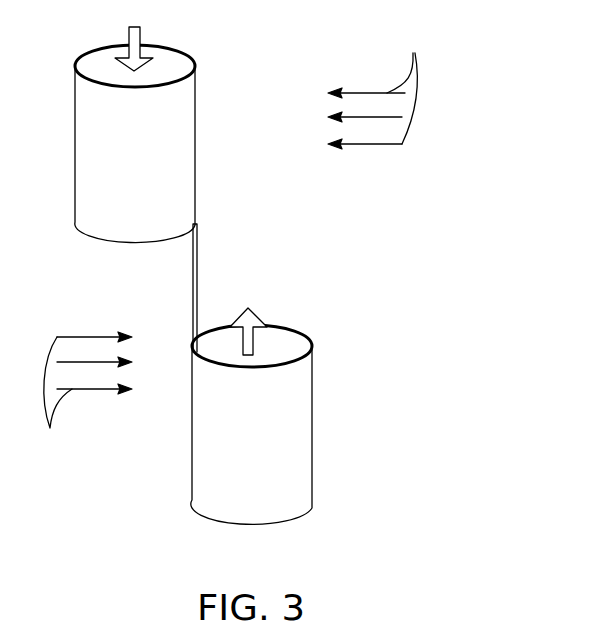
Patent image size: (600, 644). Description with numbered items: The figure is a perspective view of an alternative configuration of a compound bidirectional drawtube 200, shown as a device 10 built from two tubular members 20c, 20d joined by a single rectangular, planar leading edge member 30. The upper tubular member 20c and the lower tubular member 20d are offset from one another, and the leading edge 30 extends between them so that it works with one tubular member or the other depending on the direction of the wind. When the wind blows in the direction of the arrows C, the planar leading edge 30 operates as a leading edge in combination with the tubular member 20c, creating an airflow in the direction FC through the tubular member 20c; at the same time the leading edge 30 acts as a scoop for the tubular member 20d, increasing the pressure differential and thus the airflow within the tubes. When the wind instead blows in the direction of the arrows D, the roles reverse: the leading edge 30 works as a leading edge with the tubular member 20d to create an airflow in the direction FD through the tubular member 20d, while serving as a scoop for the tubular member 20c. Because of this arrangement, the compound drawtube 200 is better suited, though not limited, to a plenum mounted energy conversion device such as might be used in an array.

The assembly 10 is at (190, 441).
The tubular member 20c is at (196, 180).
The tubular member 20d is at (312, 435).
The leading edge member 30 is at (197, 275).
The compound bidirectional drawtube 200 is at (343, 258).
The airflow direction FC is at (142, 35).
The airflow direction FD is at (262, 330).
The wind direction arrows C is at (373, 87).
The wind direction arrows D is at (87, 396).